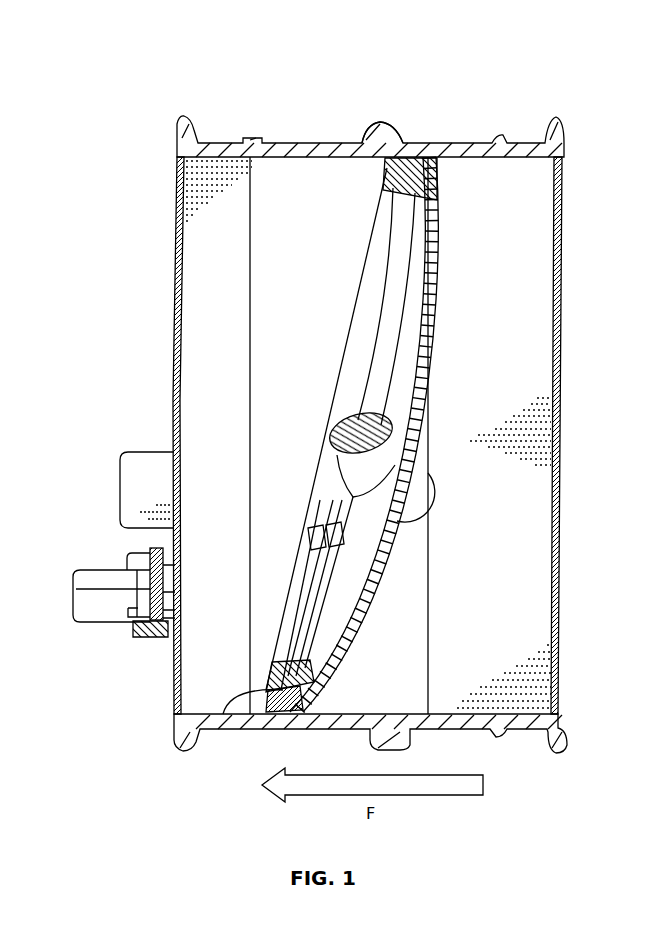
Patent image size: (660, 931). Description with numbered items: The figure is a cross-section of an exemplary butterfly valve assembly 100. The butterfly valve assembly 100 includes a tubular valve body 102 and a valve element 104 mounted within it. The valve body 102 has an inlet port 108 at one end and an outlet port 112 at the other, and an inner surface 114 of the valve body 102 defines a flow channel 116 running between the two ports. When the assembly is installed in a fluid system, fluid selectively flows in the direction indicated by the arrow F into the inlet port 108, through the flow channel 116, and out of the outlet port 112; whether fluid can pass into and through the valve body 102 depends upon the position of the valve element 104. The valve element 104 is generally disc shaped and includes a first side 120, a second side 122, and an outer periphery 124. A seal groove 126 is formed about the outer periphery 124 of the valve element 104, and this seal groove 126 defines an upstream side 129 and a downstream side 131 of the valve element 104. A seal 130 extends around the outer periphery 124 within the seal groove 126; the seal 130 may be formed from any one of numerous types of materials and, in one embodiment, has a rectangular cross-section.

The butterfly valve assembly 100 is at (164, 46).
The valve body 102 is at (350, 438).
The valve element 104 is at (437, 157).
The inlet port 108 is at (557, 374).
The outlet port 112 is at (173, 400).
The inner surface 114 is at (339, 207).
The flow channel 116 is at (523, 378).
The first side 120 is at (435, 363).
The second side 122 is at (348, 389).
The outer periphery 124 is at (399, 158).
The seal groove 126 is at (428, 155).
The upstream side 129 is at (370, 737).
The seal 130 is at (258, 726).
The downstream side 131 is at (278, 705).